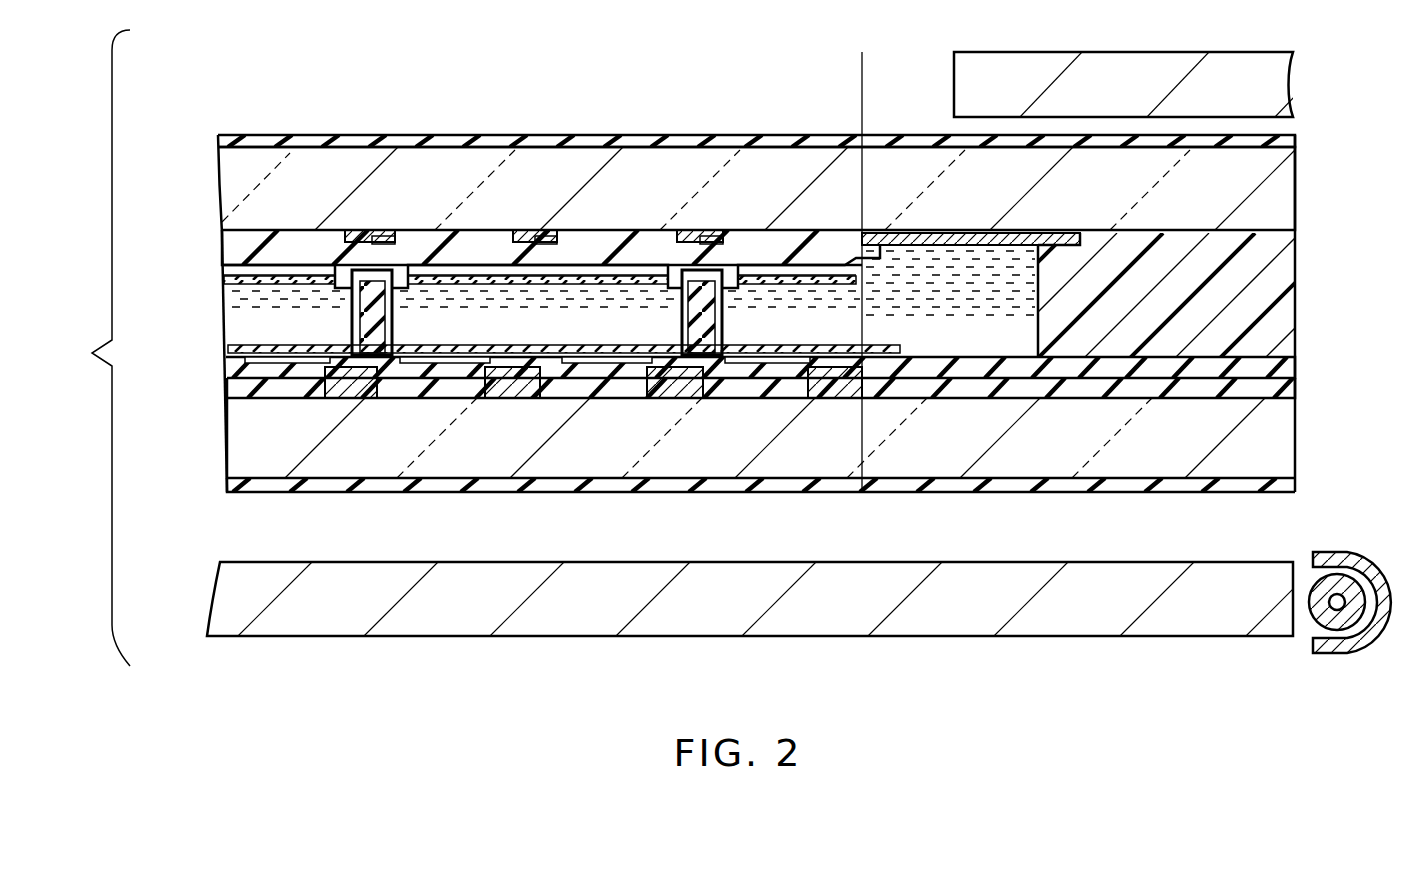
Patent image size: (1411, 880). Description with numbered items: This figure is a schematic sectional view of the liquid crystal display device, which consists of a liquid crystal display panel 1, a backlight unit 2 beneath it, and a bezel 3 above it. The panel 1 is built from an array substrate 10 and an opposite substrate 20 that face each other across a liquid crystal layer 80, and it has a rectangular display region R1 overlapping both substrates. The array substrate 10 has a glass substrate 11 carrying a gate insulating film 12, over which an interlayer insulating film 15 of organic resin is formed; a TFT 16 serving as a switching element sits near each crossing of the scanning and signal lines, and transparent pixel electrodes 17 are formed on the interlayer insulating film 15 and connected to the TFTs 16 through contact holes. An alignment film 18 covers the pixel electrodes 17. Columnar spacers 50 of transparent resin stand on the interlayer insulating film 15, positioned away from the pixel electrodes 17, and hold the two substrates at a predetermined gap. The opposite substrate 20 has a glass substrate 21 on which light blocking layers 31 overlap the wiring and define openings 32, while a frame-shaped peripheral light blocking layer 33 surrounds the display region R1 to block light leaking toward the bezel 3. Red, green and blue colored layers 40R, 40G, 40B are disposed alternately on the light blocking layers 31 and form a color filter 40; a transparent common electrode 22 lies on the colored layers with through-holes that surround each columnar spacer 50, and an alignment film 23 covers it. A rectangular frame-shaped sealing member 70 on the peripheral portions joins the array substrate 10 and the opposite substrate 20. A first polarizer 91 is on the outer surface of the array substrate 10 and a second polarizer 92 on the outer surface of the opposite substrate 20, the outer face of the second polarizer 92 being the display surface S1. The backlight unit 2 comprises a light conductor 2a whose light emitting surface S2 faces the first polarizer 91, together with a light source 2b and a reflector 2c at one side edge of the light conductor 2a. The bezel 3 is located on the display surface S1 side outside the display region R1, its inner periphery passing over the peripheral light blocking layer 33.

The liquid crystal display panel 1 is at (1318, 247).
The backlight unit 2 is at (1243, 655).
The light conductor 2a is at (965, 630).
The light source 2b is at (1355, 590).
The reflector 2c is at (1355, 652).
The bezel 3 is at (1278, 79).
The array substrate 10 is at (202, 412).
The glass substrate 11 is at (1285, 440).
The gate insulating film 12 is at (1290, 390).
The interlayer insulating film 15 is at (1290, 367).
The TFT 16 is at (352, 398).
The pixel electrode 17 is at (302, 364).
The alignment film 18 is at (246, 348).
The opposite substrate 20 is at (198, 190).
The glass substrate 21 is at (1282, 180).
The common electrode 22 is at (224, 270).
The alignment film 23 is at (226, 281).
The light blocking layer 31 is at (372, 230).
The opening 32 is at (394, 236).
The peripheral light blocking layer 33 is at (930, 233).
The color filter 40 is at (446, 220).
The blue colored layer 40B is at (312, 245).
The red colored layer 40R is at (500, 247).
The green colored layer 40G is at (648, 247).
The columnar spacer 50 is at (383, 318).
The sealing member 70 is at (1283, 286).
The liquid crystal layer 80 is at (234, 322).
The first polarizer 91 is at (1283, 484).
The second polarizer 92 is at (1283, 145).
The display region R1 is at (218, 132).
The display surface S1 is at (880, 136).
The light emitting surface S2 is at (758, 560).